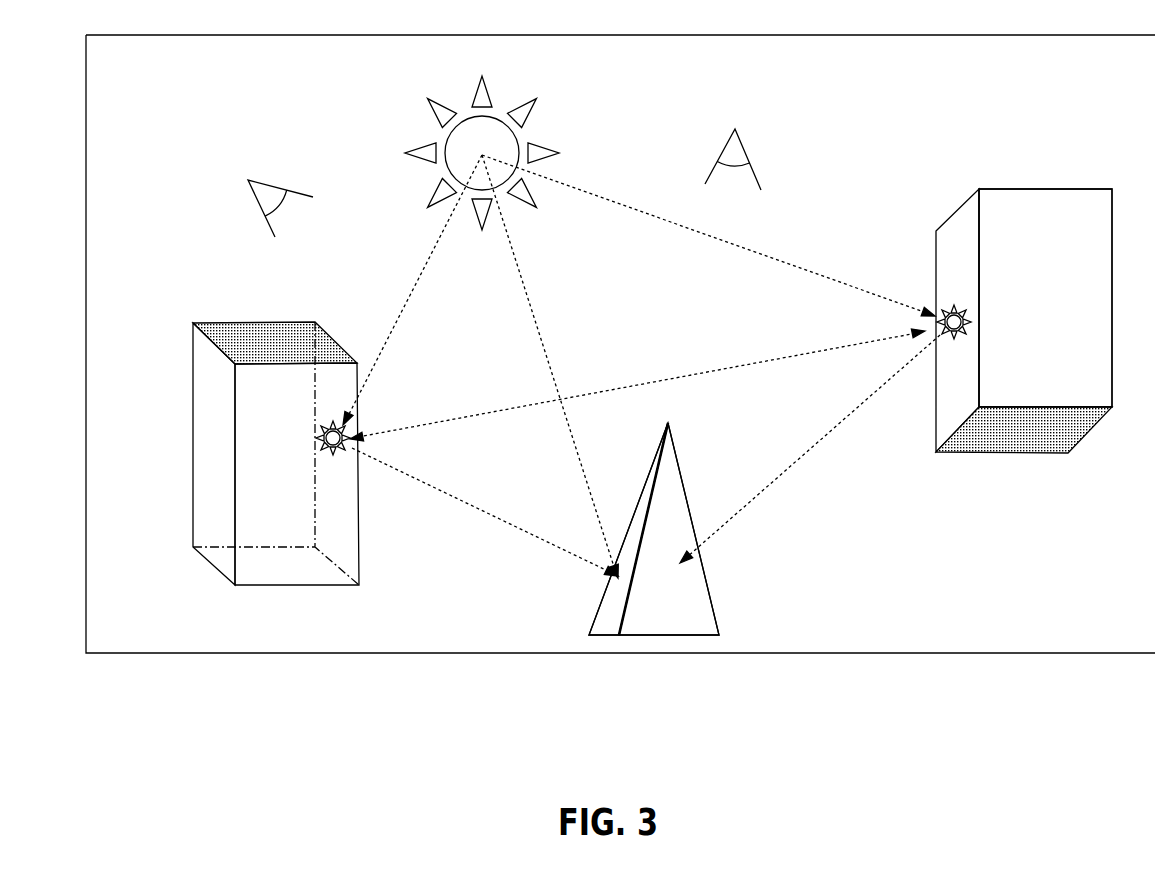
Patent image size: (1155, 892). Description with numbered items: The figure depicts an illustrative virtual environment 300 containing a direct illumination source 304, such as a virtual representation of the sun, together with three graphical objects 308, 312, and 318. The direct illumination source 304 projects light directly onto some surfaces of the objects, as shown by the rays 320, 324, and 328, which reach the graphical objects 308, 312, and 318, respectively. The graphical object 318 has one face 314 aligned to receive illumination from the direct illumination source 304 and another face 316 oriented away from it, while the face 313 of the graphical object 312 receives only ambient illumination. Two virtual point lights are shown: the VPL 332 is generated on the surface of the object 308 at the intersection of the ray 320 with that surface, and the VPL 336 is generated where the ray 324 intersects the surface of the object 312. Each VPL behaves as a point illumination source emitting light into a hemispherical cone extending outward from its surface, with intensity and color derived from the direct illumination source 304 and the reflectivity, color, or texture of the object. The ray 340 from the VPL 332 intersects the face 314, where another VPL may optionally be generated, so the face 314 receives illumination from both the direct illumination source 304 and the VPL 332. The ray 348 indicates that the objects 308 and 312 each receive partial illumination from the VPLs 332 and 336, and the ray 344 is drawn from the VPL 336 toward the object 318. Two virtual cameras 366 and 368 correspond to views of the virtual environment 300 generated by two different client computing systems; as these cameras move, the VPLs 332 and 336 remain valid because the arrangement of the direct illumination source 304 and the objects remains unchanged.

The virtual environment 300 is at (347, 654).
The direct illumination source 304 is at (445, 140).
The graphical object 308 is at (298, 322).
The graphical object 312 is at (1050, 189).
The face 313 is at (1093, 225).
The face 314 is at (612, 603).
The face 316 is at (712, 590).
The graphical object 318 is at (668, 423).
The ray 320 is at (410, 307).
The ray 324 is at (747, 255).
The ray 328 is at (537, 313).
The virtual point light (VPL) 332 is at (340, 452).
The virtual point light (VPL) 336 is at (940, 313).
The ray 340 is at (528, 537).
The reflected ray from second object to third object 344 is at (800, 462).
The ray 348 is at (642, 385).
The virtual camera 366 is at (260, 180).
The virtual camera 368 is at (747, 150).